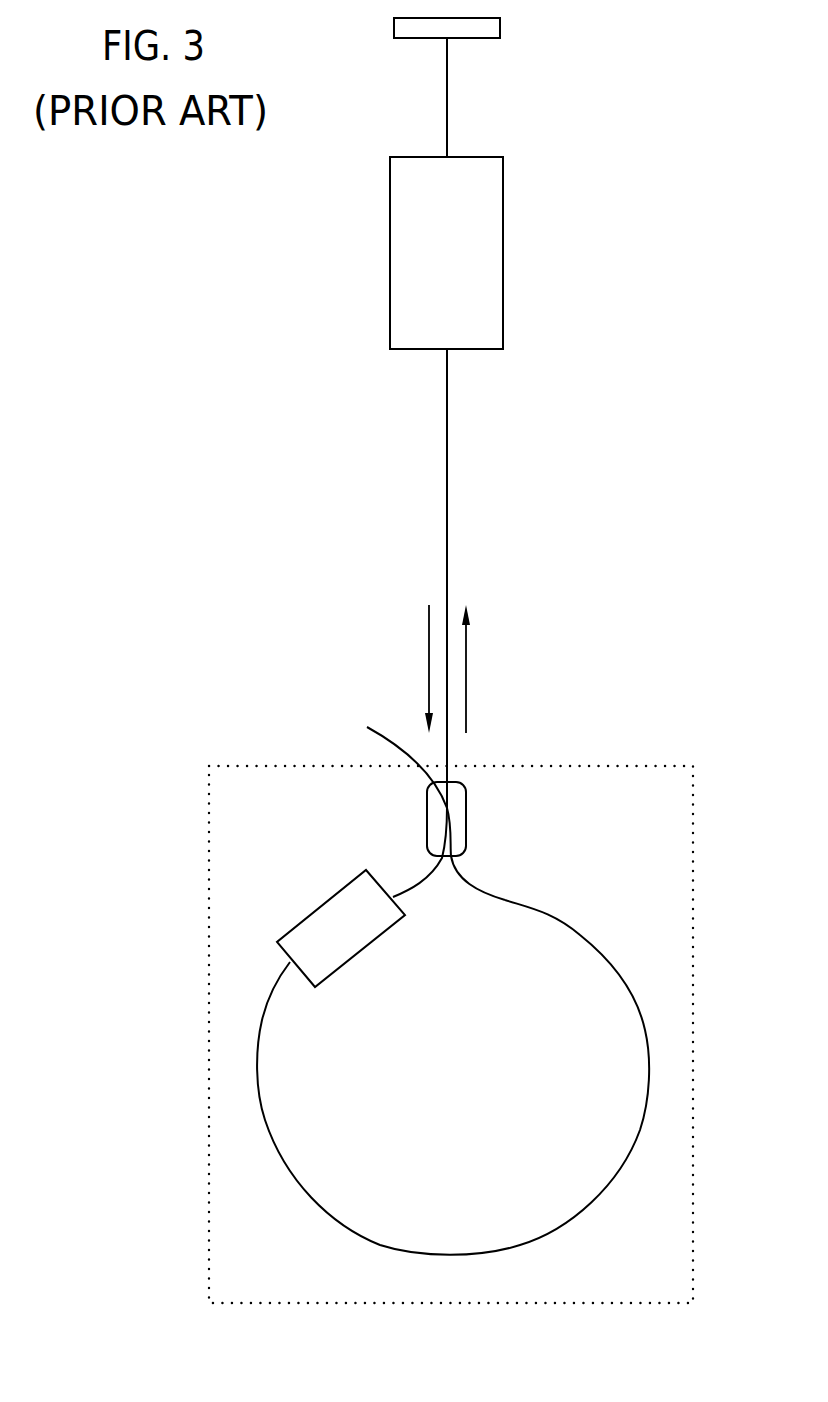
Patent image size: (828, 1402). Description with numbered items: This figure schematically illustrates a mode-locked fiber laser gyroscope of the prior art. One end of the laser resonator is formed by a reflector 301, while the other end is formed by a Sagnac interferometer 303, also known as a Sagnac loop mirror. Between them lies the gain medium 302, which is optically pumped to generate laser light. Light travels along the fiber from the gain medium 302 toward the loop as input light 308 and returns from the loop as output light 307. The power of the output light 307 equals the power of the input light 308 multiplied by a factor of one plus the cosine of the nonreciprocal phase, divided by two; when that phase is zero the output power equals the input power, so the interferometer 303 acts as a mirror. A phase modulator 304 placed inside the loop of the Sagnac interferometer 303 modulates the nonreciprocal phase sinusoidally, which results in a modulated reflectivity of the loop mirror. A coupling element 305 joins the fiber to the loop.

The reflector 301 is at (394, 28).
The gain medium 302 is at (390, 260).
The Sagnac interferometer 303 is at (245, 766).
The phase modulator 304 is at (318, 907).
The fiber coupler 305 is at (466, 811).
The output light 307 is at (466, 677).
The input light 308 is at (429, 660).